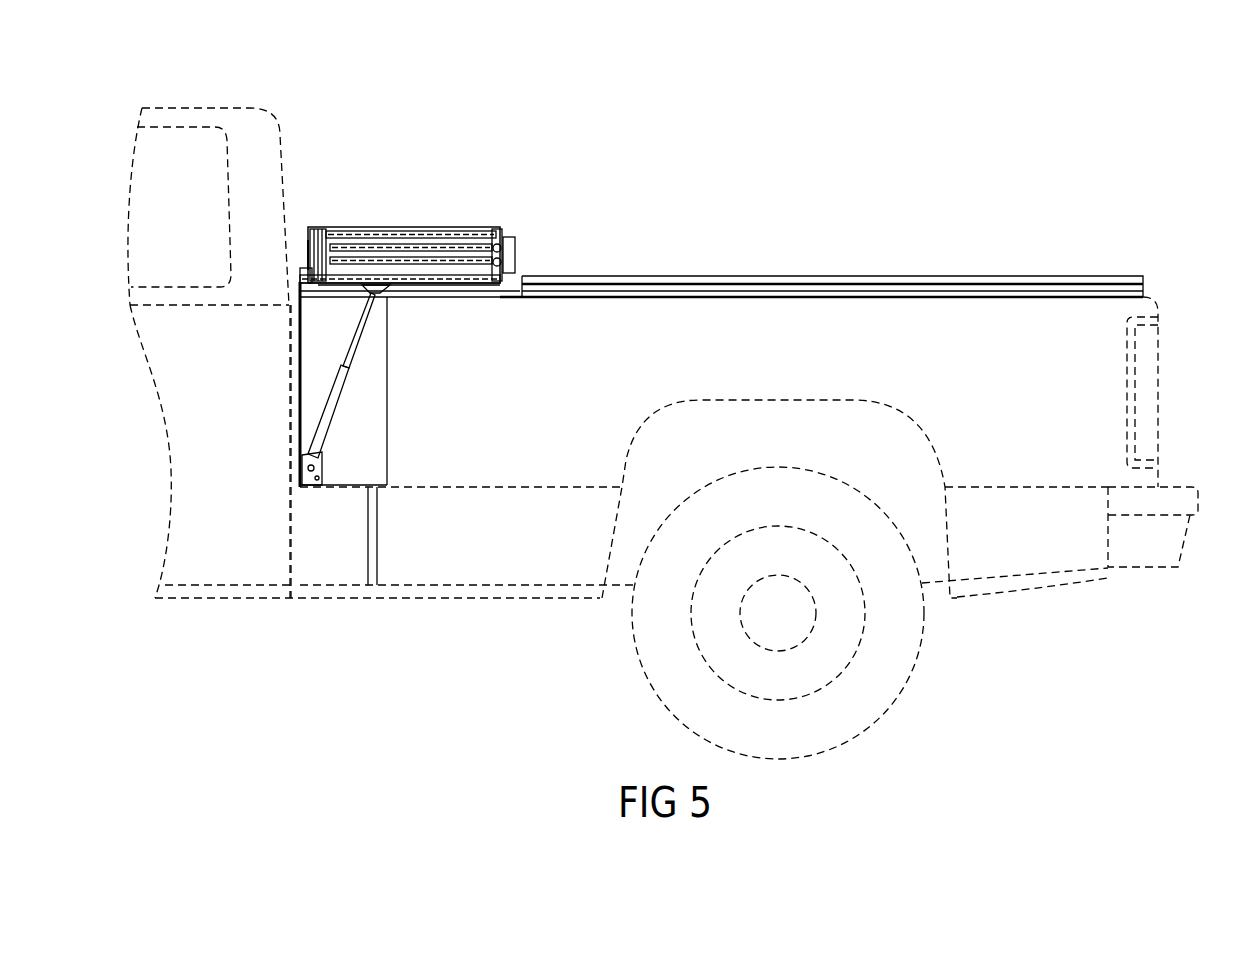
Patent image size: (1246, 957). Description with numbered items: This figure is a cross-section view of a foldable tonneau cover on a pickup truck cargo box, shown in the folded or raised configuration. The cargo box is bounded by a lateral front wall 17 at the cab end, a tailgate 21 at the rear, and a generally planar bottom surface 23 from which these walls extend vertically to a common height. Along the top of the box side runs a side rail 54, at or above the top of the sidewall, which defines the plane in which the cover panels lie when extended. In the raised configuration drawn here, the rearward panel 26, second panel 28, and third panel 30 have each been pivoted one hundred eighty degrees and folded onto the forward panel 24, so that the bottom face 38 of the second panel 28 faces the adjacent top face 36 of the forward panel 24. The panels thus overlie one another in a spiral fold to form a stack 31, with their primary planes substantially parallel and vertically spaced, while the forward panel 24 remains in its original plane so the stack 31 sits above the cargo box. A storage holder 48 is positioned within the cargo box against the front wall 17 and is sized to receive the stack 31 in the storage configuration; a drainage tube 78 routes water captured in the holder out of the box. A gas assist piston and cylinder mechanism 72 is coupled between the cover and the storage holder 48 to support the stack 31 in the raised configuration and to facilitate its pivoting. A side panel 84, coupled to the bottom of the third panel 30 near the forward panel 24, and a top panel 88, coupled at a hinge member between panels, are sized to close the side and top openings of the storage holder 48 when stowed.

The front wall 17 is at (300, 535).
The tailgate 21 is at (1160, 302).
The bottom surface 23 is at (490, 487).
The forward panel 24 is at (505, 273).
The rearward panel 26 is at (508, 237).
The second panel 28 is at (508, 255).
The third panel 30 is at (462, 228).
The stack 31 is at (410, 235).
The top face 36 is at (418, 285).
The bottom face 38 is at (362, 228).
The storage holder 48 is at (380, 370).
The side rail 54 is at (1048, 278).
The gas assist piston and cylinder mechanism 72 is at (335, 407).
The drainage tube 78 is at (377, 531).
The side panel 84 is at (387, 228).
The top panel 88 is at (308, 250).